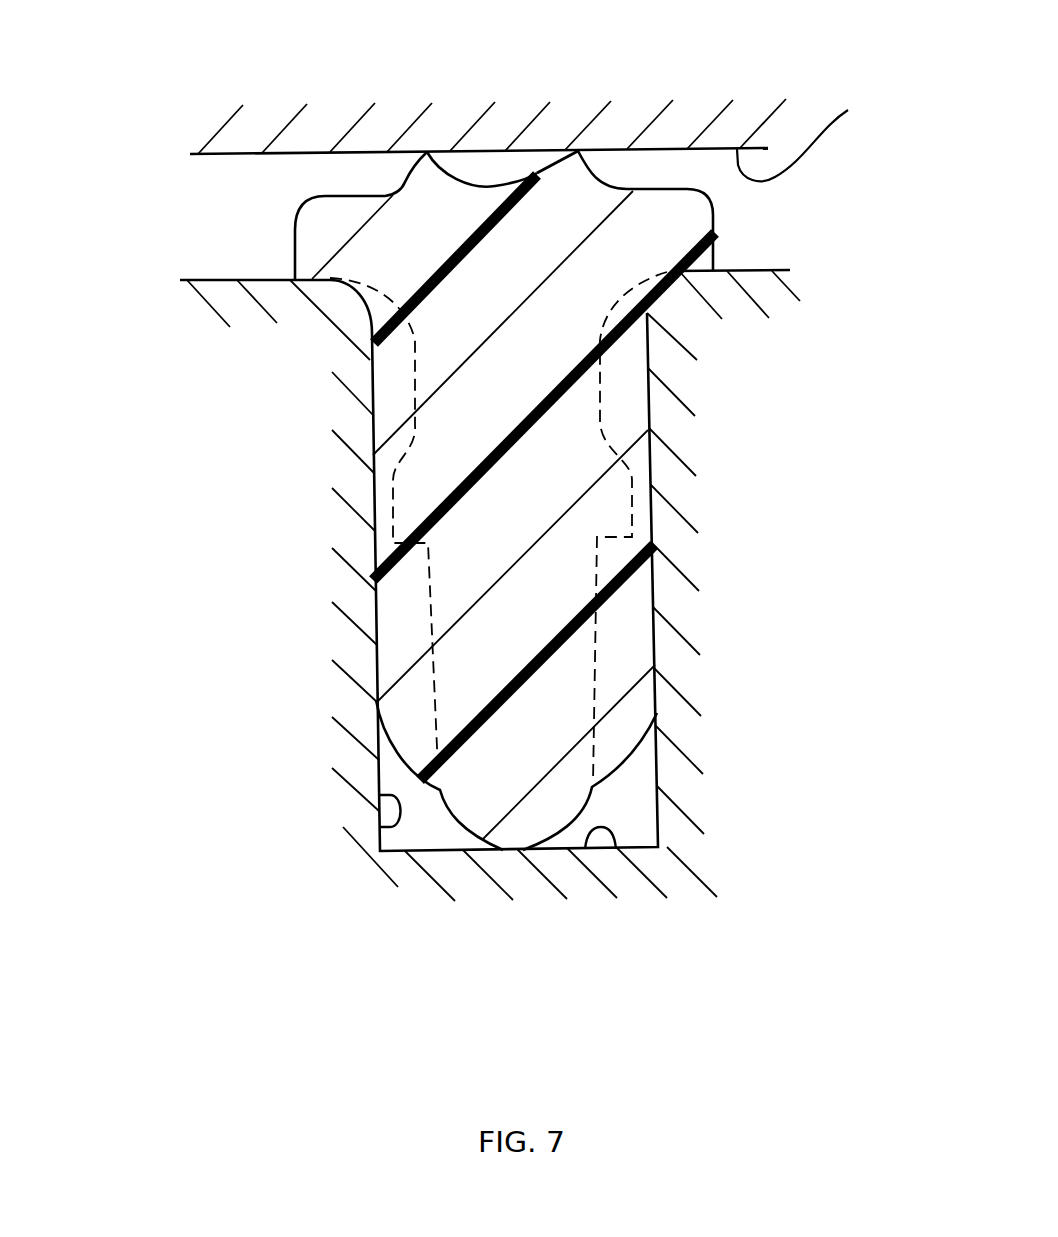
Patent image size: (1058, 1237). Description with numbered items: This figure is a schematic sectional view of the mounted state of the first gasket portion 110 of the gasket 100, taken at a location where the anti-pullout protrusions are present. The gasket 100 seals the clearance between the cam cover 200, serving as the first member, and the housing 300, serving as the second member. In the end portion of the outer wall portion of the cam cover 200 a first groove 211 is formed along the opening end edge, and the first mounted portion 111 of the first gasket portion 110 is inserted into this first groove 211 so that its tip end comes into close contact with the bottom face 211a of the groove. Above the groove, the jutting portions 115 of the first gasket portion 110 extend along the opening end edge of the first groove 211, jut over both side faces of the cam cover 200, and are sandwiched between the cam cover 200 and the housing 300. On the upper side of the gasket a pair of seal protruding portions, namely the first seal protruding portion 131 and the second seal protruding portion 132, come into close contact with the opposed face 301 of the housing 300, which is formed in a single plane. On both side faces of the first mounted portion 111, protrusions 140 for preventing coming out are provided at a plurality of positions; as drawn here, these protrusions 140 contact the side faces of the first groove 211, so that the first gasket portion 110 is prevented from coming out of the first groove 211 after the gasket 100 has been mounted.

The gasket 100 is at (536, 425).
The first gasket portion 110 is at (358, 628).
The first mounted portion 111 is at (590, 443).
The jutting portions 115 is at (597, 166).
The first seal protruding portion 131 is at (427, 152).
The second seal protruding portion 132 is at (579, 151).
The protrusions for preventing coming out 140 is at (630, 650).
The cam cover 200 is at (233, 297).
The first groove 211 is at (378, 827).
The bottom face of the first groove 211a is at (618, 866).
The housing 300 is at (253, 137).
The opposed face 301 is at (833, 124).